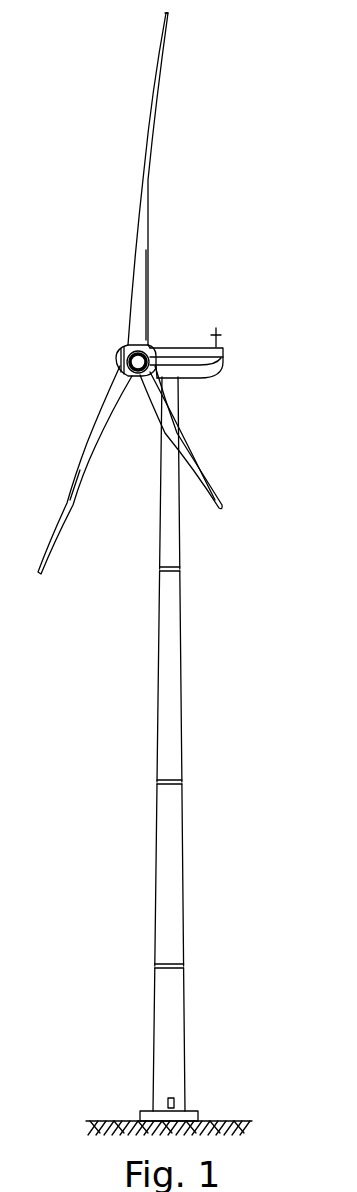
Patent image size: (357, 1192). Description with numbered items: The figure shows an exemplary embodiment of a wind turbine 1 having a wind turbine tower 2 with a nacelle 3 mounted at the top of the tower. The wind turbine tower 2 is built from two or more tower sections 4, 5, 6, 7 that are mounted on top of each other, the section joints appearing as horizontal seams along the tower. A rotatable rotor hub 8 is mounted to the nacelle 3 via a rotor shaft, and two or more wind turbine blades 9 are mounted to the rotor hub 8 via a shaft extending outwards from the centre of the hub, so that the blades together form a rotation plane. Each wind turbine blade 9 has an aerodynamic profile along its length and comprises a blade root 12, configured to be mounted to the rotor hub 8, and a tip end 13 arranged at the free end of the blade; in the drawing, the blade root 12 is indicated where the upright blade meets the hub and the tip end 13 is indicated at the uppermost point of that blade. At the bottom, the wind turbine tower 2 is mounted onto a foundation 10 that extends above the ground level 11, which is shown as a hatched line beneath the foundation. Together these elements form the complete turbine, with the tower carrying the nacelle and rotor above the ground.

The wind turbine 1 is at (258, 335).
The wind turbine tower 2 is at (183, 843).
The nacelle 3 is at (193, 352).
The tower section 4 is at (173, 1033).
The tower section 5 is at (172, 928).
The tower section 6 is at (170, 712).
The tower section 7 is at (172, 548).
The rotor hub 8 is at (124, 352).
The wind turbine blade 9 is at (143, 254).
The foundation 10 is at (195, 1118).
The ground level 11 is at (242, 1119).
The blade root 12 is at (153, 340).
The tip end 13 is at (167, 13).